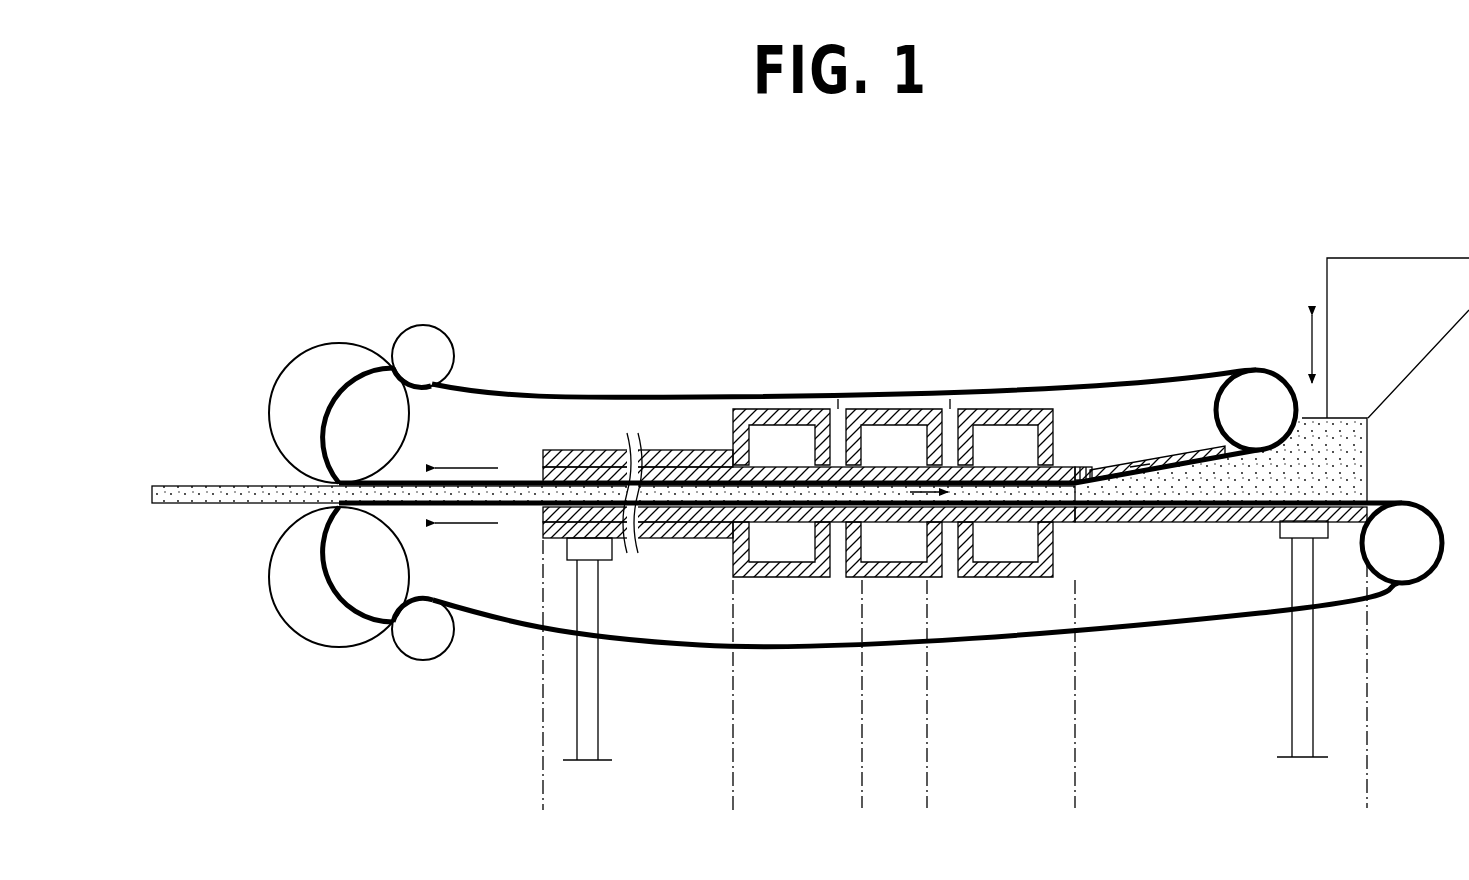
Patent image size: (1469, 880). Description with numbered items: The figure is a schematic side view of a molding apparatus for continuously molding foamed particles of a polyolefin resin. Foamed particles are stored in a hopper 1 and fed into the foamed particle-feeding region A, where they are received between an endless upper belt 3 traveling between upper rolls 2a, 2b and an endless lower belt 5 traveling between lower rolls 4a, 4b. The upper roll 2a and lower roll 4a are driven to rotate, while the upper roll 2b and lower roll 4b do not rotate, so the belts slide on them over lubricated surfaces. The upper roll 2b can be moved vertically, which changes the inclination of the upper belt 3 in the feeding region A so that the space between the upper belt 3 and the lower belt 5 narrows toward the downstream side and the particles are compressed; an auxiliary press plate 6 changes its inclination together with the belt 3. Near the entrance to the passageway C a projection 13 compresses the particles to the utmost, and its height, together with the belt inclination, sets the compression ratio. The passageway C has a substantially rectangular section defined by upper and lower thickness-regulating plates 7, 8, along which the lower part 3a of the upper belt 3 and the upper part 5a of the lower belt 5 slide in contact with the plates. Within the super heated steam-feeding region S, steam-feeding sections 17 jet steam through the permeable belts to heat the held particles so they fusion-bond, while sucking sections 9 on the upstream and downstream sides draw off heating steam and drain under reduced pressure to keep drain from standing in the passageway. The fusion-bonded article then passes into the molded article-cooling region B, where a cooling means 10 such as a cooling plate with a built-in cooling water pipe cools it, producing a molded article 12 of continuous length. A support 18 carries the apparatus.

The hopper 1 is at (1430, 298).
The upper roll 2a is at (338, 380).
The upper roll 2b is at (1258, 395).
The upper belt 3 is at (1142, 388).
The lower part of the upper belt 3a is at (1204, 452).
The lower roll 4a is at (316, 613).
The lower roll 4b is at (1405, 565).
The lower belt 5 is at (1330, 605).
The upper part of the lower belt 5a is at (1225, 500).
The auxiliary press plate 6 is at (1137, 462).
The upper thickness-regulating plate 7 is at (682, 472).
The lower thickness-regulating plate 8 is at (652, 523).
The sucking sections 9 is at (777, 412).
The cooling means 10 is at (583, 457).
The molded article 12 is at (217, 503).
The projection 13 is at (1072, 478).
The steam-feeding sections 17 is at (867, 408).
The support 18 is at (583, 690).
The passageway C is at (920, 477).
The foamed particle-feeding region A is at (1367, 798).
The molded article-cooling region B is at (733, 800).
The super heated steam-feeding region S is at (927, 798).